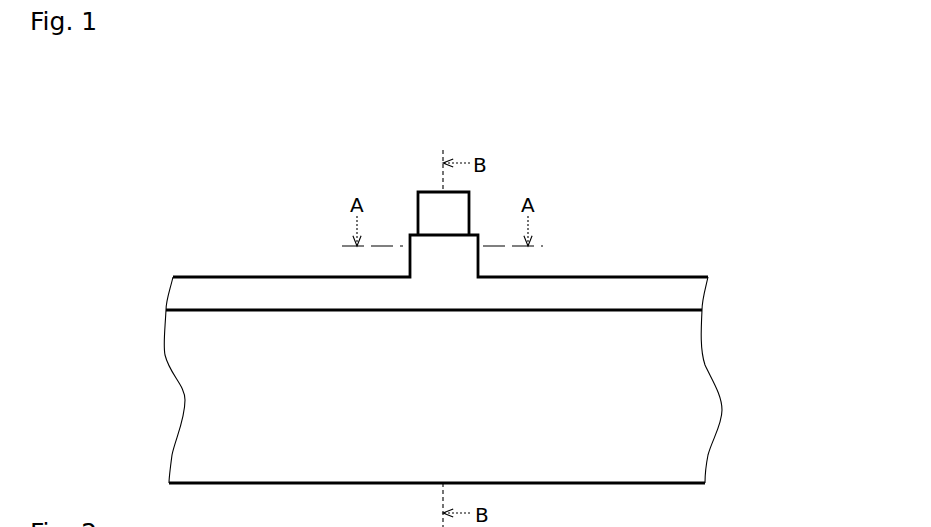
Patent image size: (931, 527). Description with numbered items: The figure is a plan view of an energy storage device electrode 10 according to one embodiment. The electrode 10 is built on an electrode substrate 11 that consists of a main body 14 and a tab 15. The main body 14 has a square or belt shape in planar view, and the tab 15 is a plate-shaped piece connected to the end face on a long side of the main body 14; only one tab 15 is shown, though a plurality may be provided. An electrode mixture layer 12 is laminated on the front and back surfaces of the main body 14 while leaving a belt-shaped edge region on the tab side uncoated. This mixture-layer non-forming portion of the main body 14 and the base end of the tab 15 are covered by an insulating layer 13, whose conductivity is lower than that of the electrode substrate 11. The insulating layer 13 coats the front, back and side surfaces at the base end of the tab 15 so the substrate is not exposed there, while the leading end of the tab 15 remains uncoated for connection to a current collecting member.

The electrode 10 is at (283, 165).
The electrode substrate 11 is at (718, 397).
The electrode mixture layer 12 is at (222, 407).
The insulating layer 13 is at (422, 263).
The main body 14 is at (633, 263).
The tab 15 is at (483, 208).